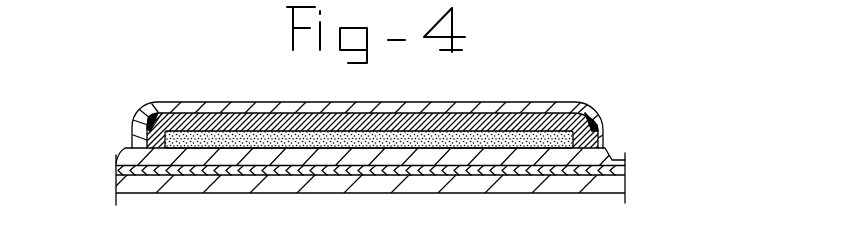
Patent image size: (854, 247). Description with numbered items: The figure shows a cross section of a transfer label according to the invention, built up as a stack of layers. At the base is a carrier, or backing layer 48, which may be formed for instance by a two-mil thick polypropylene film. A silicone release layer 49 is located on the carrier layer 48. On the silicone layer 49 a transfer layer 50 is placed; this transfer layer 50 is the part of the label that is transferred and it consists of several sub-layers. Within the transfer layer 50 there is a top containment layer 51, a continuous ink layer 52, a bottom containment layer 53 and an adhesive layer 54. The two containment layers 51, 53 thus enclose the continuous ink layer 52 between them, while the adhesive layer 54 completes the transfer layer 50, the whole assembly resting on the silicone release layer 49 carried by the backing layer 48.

The carrier layer 48 is at (588, 185).
The silicone release layer 49 is at (624, 165).
The transfer layer 50 is at (132, 107).
The top containment layer 51 is at (623, 158).
The continuous ink layer 52 is at (600, 130).
The bottom containment layer 53 is at (562, 102).
The adhesive layer 54 is at (497, 103).